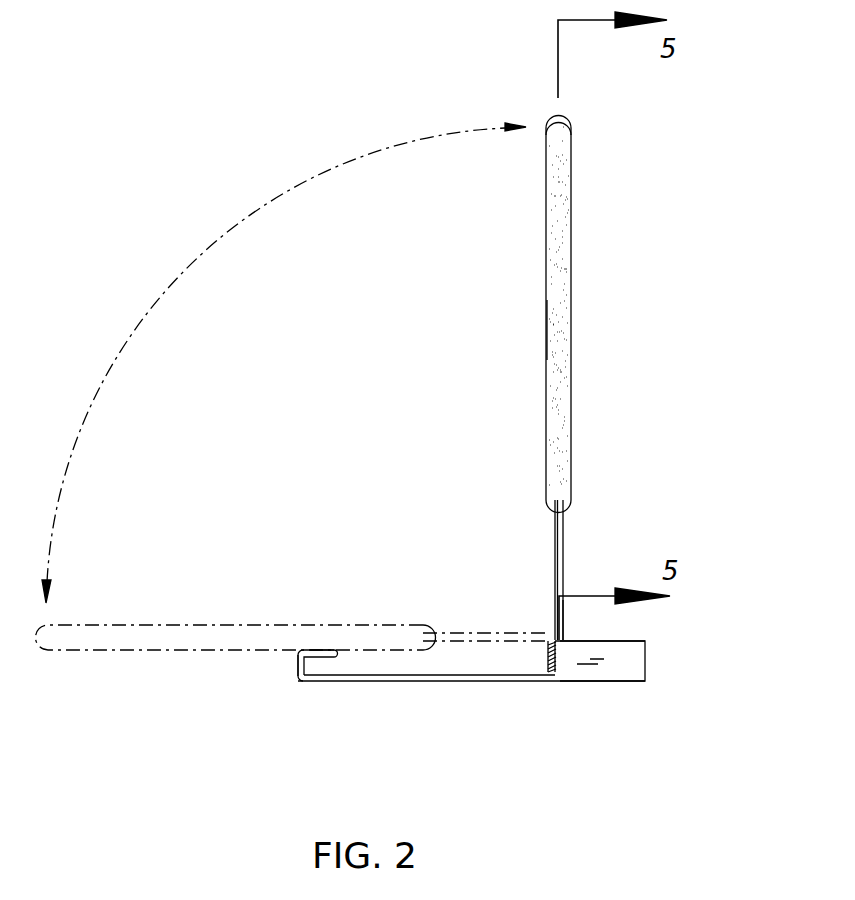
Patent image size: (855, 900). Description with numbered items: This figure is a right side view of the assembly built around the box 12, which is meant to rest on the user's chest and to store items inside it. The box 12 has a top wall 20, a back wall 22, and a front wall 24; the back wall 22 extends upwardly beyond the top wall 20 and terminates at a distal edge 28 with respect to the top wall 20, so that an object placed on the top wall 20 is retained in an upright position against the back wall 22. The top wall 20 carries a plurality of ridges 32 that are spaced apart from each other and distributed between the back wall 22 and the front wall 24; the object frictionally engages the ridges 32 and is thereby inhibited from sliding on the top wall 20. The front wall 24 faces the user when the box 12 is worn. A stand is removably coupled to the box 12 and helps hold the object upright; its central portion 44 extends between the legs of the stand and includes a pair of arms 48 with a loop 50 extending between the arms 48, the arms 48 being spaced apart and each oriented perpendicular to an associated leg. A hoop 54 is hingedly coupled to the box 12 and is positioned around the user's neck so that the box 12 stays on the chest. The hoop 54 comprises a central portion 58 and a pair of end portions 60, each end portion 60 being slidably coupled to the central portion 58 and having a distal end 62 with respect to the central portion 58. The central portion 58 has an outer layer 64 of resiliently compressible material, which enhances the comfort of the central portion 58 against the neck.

The box 12 is at (645, 643).
The top wall 20 is at (548, 645).
The back wall 22 is at (587, 681).
The front wall 24 is at (602, 641).
The distal edge 28 is at (472, 676).
The ridges 32 is at (549, 660).
The central portion 44 is at (290, 656).
The arms 48 is at (297, 665).
The loop 50 is at (324, 652).
The hoop 54 is at (585, 293).
The central portion 58 is at (572, 130).
The end portions 60 is at (555, 530).
The distal end 62 is at (565, 640).
The outer layer 64 is at (556, 327).